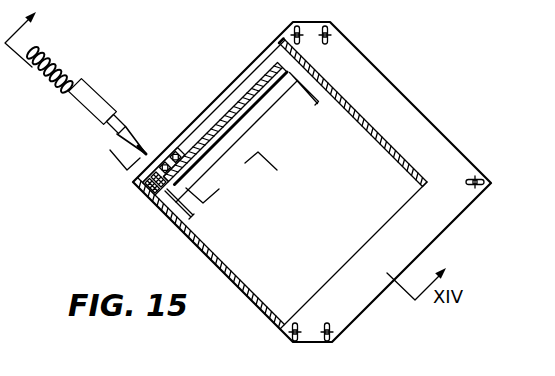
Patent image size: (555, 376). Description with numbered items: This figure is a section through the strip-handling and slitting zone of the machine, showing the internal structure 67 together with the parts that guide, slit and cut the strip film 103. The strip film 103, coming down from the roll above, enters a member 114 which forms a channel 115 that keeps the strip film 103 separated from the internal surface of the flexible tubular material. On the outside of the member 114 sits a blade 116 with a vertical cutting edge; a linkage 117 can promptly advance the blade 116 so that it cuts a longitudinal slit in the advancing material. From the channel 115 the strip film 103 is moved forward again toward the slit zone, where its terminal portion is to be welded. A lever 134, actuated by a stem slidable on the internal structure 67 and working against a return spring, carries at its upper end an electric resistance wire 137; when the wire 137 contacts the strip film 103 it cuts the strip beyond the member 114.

The internal structure 67 is at (378, 120).
The strip film 103 is at (221, 140).
The member 114 is at (147, 196).
The channel 115 is at (218, 120).
The blade 116 is at (138, 146).
The linkage 117 is at (43, 41).
The lever 134 is at (308, 95).
The electric resistance wire 137 is at (267, 106).